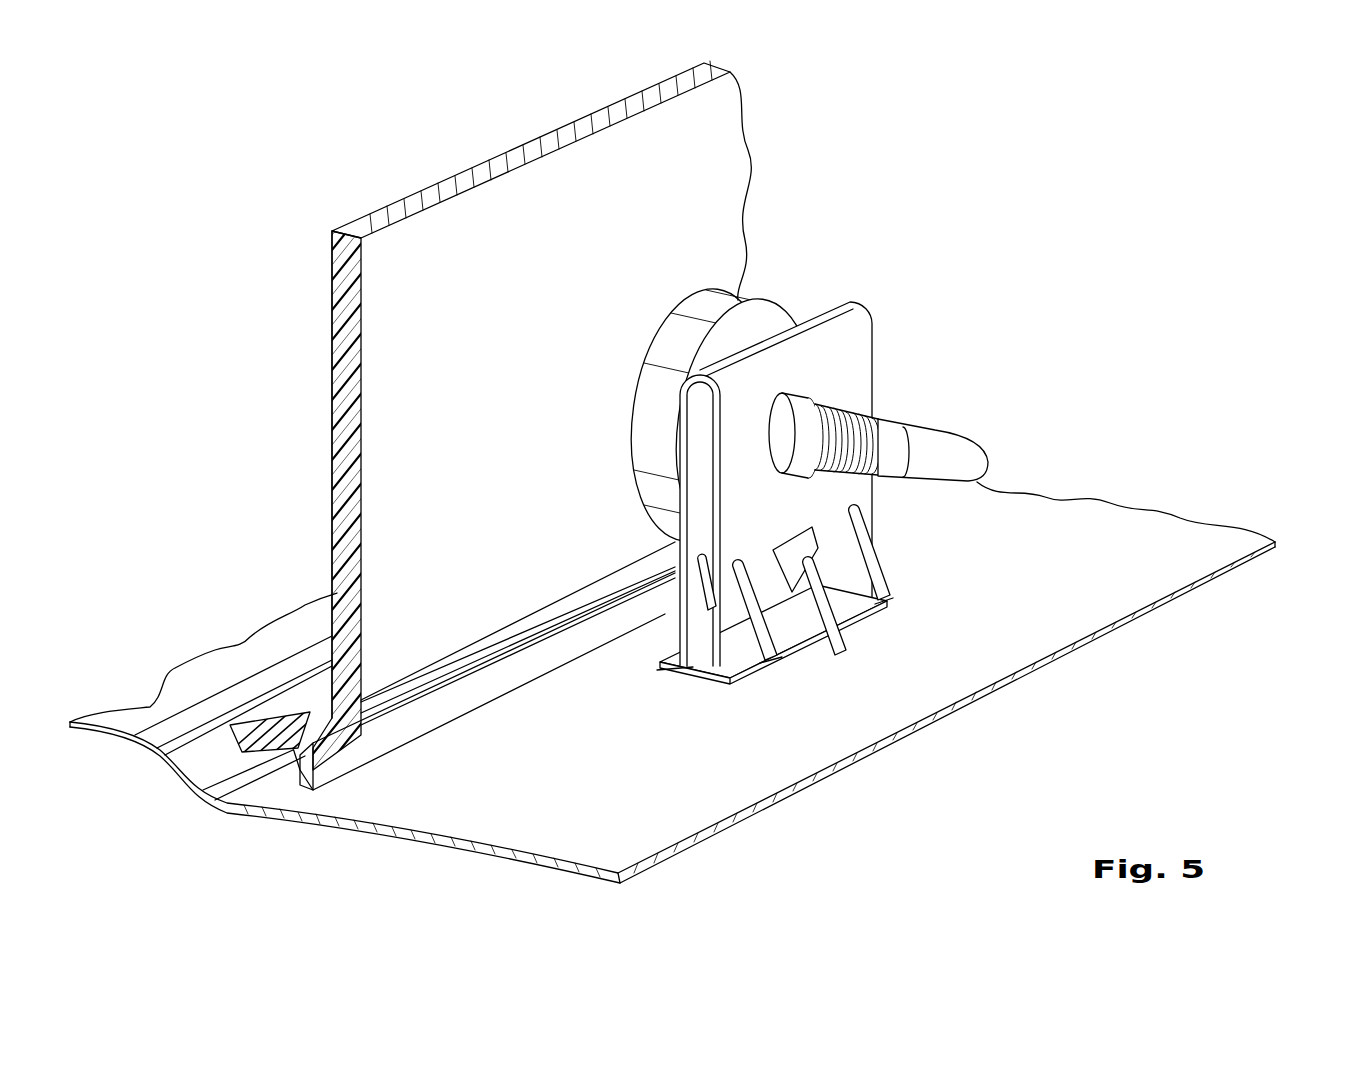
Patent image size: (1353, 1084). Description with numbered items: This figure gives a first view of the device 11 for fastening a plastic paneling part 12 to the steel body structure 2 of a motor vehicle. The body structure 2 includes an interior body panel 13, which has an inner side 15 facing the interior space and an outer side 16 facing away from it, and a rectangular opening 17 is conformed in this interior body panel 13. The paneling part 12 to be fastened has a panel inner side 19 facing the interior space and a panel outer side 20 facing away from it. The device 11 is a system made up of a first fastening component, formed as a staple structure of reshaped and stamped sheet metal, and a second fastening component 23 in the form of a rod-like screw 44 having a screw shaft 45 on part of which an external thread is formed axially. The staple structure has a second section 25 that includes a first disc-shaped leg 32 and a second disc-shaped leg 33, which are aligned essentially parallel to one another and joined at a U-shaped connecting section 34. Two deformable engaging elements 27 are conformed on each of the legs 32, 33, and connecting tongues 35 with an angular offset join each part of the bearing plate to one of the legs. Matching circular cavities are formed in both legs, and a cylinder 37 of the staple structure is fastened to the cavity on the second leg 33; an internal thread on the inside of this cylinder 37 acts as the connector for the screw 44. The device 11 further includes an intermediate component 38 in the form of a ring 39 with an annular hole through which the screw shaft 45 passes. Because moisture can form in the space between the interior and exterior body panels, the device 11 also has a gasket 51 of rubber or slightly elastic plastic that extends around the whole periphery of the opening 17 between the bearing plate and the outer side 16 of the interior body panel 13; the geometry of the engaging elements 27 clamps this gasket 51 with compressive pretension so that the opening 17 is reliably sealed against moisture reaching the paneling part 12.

The body structure 2 is at (160, 700).
The interior body panel 13 is at (370, 798).
The device 11 is at (898, 358).
The paneling part 12 is at (343, 230).
The inner side 15 is at (1020, 640).
The outer side 16 is at (1118, 633).
The opening 17 is at (697, 670).
The panel inner side 19 is at (331, 300).
The panel outer side 20 is at (392, 331).
The second fastening component 23 is at (939, 437).
The second section 25 is at (771, 495).
The engaging elements 27 is at (880, 560).
The first leg 32 is at (862, 343).
The second leg 33 is at (700, 423).
The U-shaped connecting section 34 is at (843, 307).
The connecting tongues 35 is at (683, 648).
The cylinder 37 is at (850, 402).
The intermediate component 38 is at (733, 293).
The ring 39 is at (745, 425).
The screw 44 is at (946, 439).
The screw shaft 45 is at (957, 457).
The gasket 51 is at (813, 633).